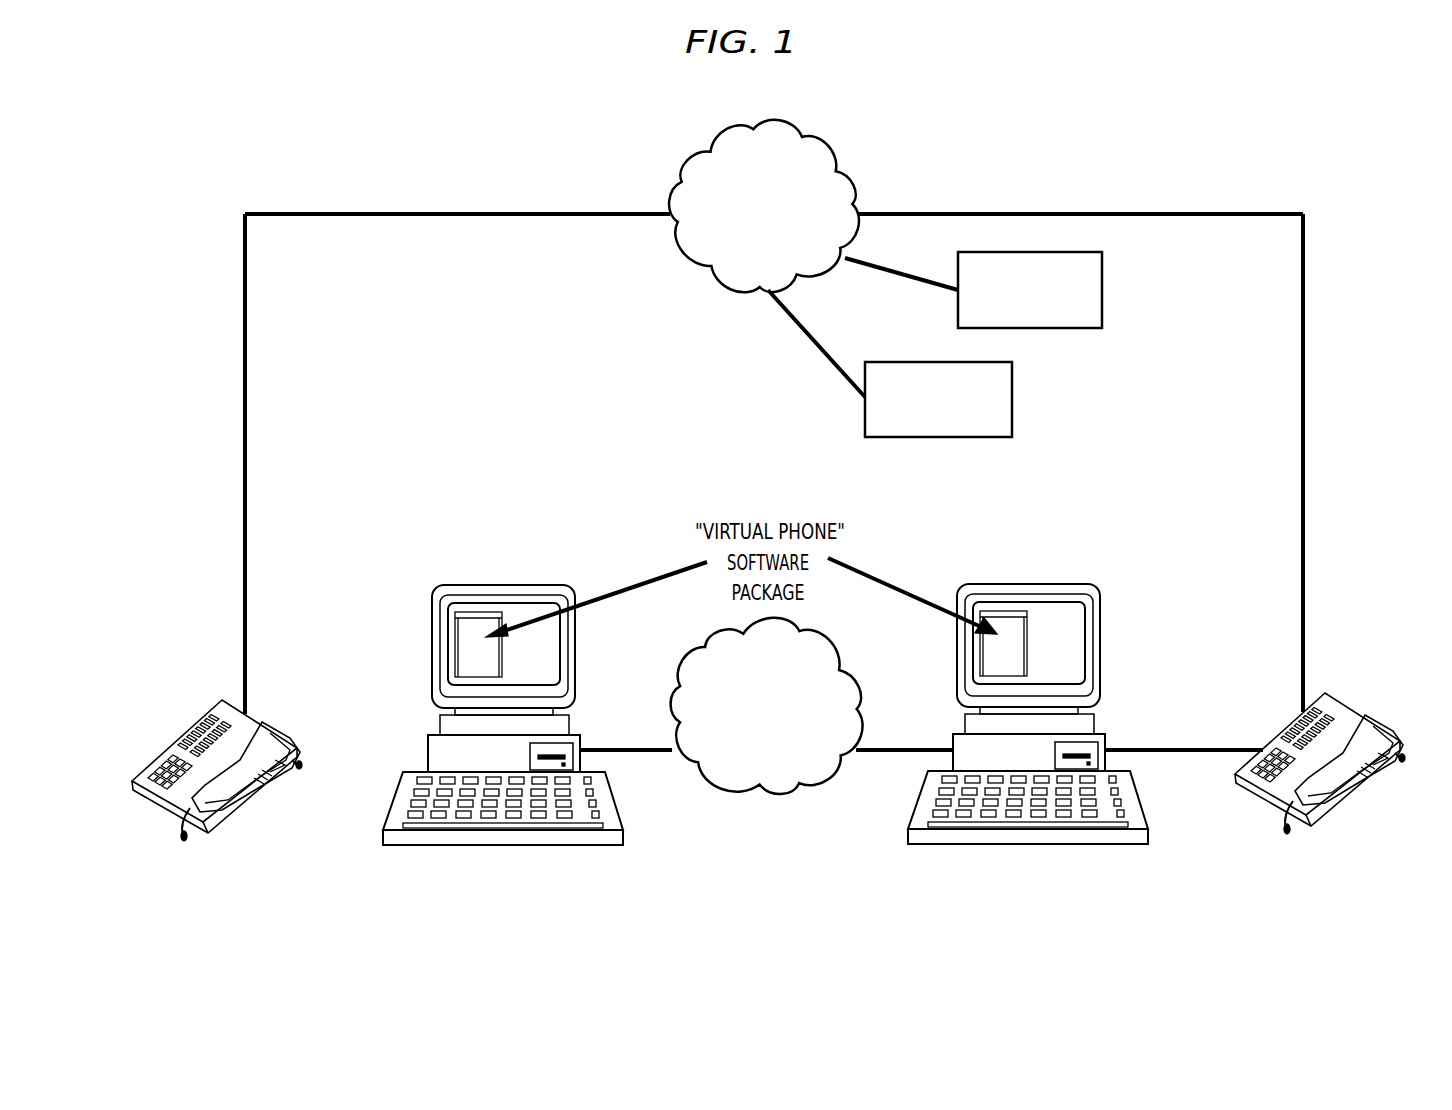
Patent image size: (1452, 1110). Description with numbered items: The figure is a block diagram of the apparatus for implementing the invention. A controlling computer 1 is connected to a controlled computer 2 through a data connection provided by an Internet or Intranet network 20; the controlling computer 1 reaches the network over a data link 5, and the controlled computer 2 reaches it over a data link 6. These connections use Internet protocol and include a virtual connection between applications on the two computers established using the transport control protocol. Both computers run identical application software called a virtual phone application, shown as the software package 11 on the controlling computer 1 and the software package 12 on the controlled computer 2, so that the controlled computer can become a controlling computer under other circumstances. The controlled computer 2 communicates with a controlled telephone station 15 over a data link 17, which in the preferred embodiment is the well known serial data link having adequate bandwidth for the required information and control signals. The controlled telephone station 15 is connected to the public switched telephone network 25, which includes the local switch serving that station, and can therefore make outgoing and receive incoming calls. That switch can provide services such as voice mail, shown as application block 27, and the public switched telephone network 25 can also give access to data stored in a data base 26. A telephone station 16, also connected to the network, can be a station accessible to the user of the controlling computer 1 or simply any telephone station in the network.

The controlling computer 1 is at (600, 845).
The controlled computer 2 is at (930, 848).
The data link 5 is at (630, 752).
The data link 6 is at (898, 752).
The virtual phone software package on controlling computer 11 is at (477, 612).
The virtual phone software package on controlled computer 12 is at (1003, 610).
The controlled telephone station 15 is at (1283, 808).
The telephone station 16 is at (285, 803).
The data link 17 is at (1165, 752).
The Internet or Intranet network 20 is at (765, 797).
The public switched telephone network 25 is at (738, 293).
The data base 26 is at (1102, 290).
The voice mail application block 27 is at (1012, 398).